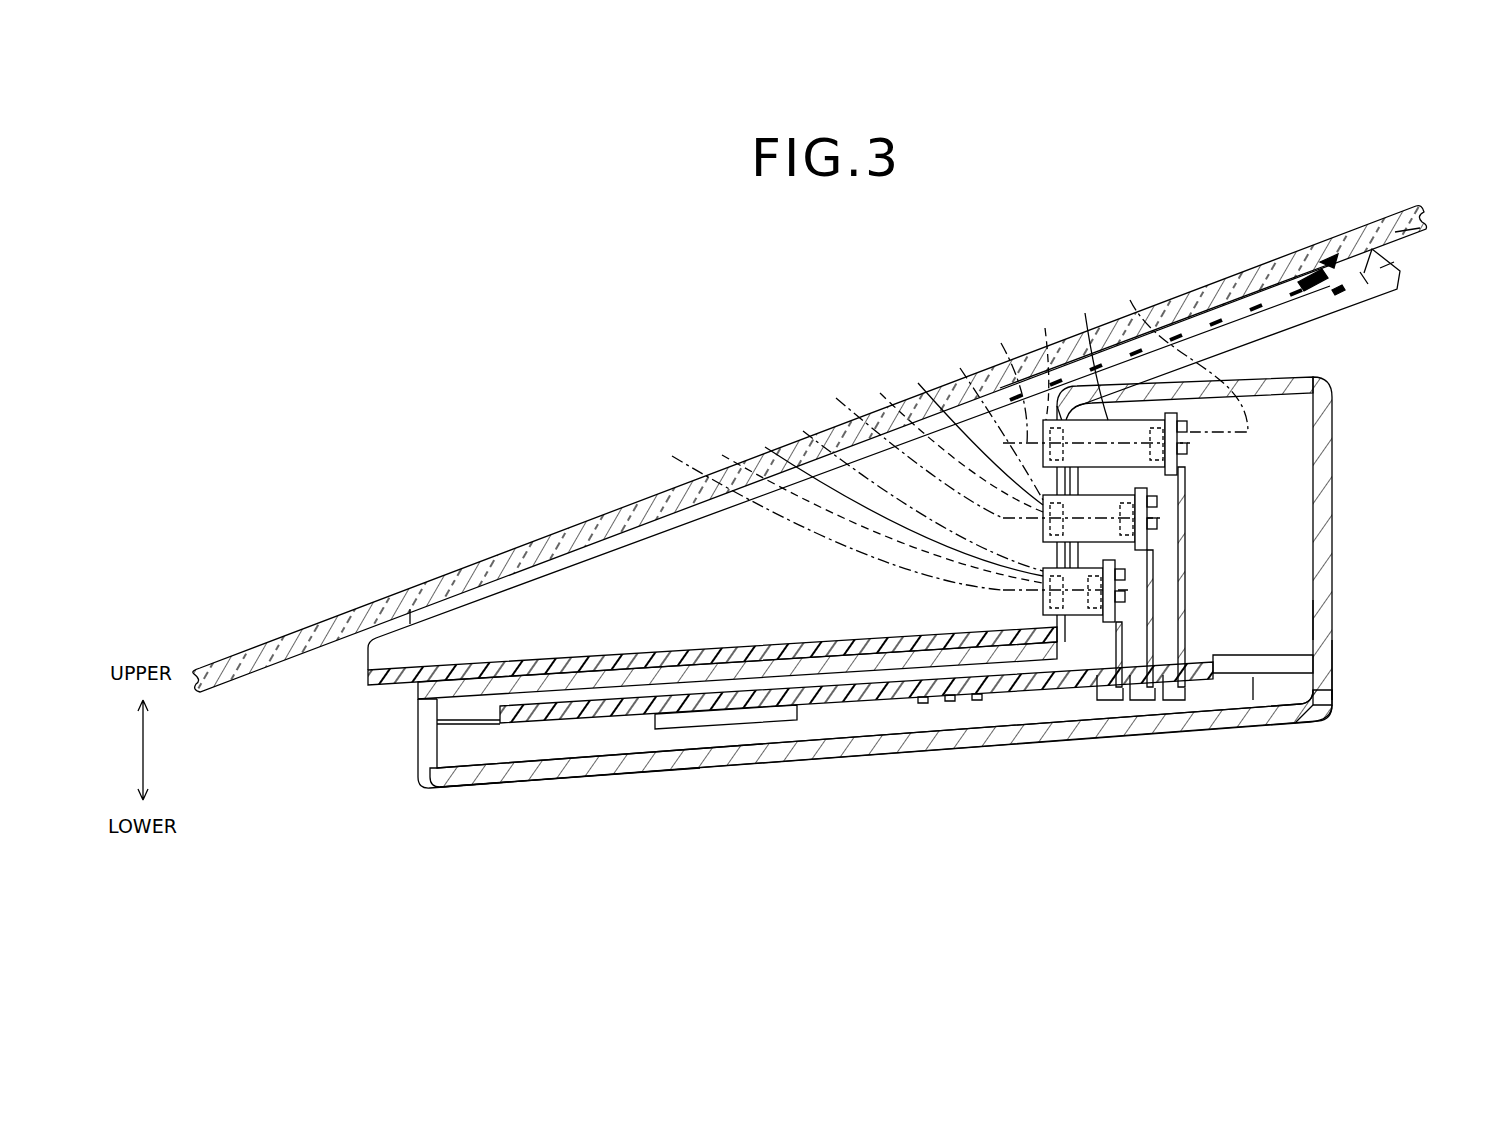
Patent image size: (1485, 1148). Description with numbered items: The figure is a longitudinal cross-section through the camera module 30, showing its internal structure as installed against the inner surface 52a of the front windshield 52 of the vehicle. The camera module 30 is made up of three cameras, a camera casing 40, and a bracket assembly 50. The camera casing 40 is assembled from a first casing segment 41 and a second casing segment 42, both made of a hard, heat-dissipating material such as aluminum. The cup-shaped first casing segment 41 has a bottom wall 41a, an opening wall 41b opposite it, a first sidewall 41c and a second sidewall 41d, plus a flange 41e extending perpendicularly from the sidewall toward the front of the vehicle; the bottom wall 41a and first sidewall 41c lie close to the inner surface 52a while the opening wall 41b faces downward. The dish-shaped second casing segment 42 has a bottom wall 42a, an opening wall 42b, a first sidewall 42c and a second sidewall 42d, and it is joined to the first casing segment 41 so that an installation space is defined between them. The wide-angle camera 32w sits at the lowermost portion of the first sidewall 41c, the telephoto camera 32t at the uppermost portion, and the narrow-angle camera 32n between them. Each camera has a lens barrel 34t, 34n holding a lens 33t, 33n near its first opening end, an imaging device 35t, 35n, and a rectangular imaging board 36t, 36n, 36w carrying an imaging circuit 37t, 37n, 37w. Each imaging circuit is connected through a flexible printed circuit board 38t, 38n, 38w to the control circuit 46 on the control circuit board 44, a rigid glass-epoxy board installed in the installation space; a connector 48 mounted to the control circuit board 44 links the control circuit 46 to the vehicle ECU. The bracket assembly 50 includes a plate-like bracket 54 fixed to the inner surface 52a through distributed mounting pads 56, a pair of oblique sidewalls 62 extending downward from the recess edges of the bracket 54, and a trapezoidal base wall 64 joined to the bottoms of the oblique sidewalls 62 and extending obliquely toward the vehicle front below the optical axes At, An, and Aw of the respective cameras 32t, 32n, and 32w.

The camera module 30 is at (385, 762).
The camera casing 40 is at (1337, 688).
The first casing segment 41 is at (1325, 406).
The bottom wall 41a is at (1233, 378).
The opening wall 41b is at (1297, 722).
The first sidewall 41c is at (1056, 620).
The second sidewall 41d is at (1262, 633).
The flange 41e is at (766, 666).
The second casing segment 42 is at (1287, 720).
The bottom wall 42a is at (450, 790).
The opening wall 42b is at (1253, 677).
The first sidewall 42c is at (437, 745).
The second sidewall 42d is at (1320, 670).
The control circuit board 44 is at (1023, 687).
The control circuit 46 is at (977, 700).
The connector 48 is at (1302, 660).
The bracket assembly 50 is at (1388, 305).
The front windshield 52 is at (1358, 226).
The inner surface 52a is at (1388, 248).
The bracket 54 is at (1207, 320).
The mounting pads 56 is at (428, 602).
The oblique sidewalls 62 is at (533, 610).
The base wall 64 is at (628, 632).
The telephoto camera 32t is at (1200, 418).
The narrow-angle camera 32n is at (1162, 494).
The wide-angle camera 32w is at (1132, 572).
The lens 33t is at (1048, 359).
The lens 33n is at (865, 474).
The lens barrel 34t is at (1090, 351).
The lens barrel 34n is at (888, 466).
The imaging device 35t is at (1180, 351).
The imaging device 35n is at (910, 455).
The imaging board 36t is at (1175, 463).
The imaging board 36n is at (1145, 530).
The imaging board 36w is at (1113, 602).
The imaging circuit 37t is at (1187, 428).
The imaging circuit 37n is at (1157, 503).
The imaging circuit 37w is at (1125, 576).
The flexible printed circuit board 38t is at (1182, 688).
The flexible printed circuit board 38n is at (1152, 690).
The flexible printed circuit board 38w is at (1118, 697).
The optical axis At is at (1004, 378).
The optical axis An is at (907, 445).
The optical axis Aw is at (819, 511).